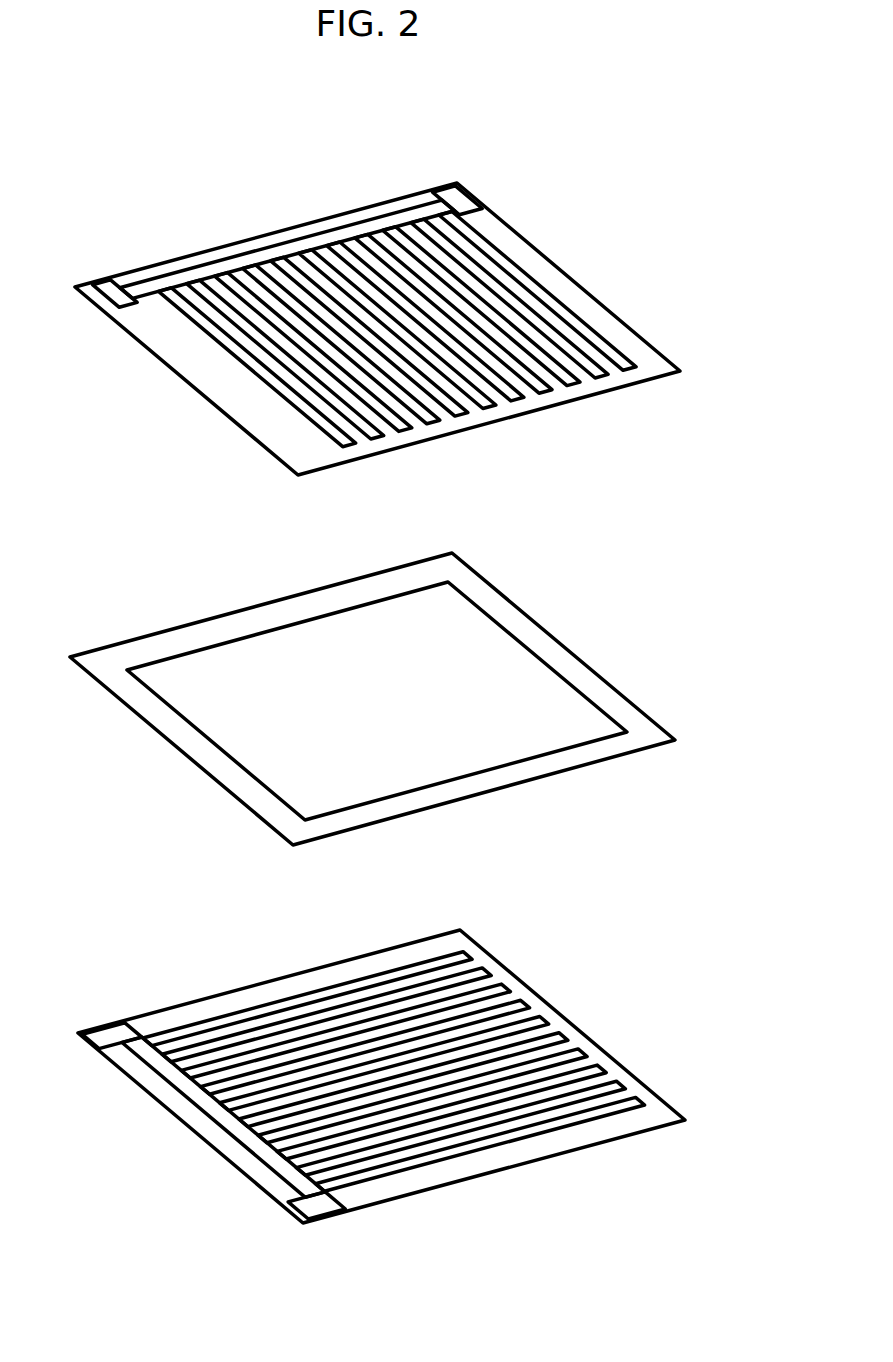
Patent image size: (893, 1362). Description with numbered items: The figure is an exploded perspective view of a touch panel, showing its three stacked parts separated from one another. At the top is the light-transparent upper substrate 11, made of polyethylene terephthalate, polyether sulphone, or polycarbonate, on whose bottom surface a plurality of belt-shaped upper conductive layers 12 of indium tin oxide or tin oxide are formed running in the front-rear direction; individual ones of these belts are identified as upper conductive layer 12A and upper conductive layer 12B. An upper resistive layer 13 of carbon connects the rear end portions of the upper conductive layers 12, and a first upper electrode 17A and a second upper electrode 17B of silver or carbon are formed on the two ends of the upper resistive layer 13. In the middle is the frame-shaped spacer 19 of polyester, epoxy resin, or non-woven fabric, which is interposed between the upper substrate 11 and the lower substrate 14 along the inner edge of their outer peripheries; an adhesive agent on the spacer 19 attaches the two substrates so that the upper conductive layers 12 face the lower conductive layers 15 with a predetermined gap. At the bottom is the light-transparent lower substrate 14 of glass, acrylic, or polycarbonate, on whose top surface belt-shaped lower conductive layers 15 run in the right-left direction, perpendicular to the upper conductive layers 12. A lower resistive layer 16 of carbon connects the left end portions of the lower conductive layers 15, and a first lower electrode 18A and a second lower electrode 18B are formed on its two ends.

The upper substrate 11 is at (603, 302).
The upper conductive layers 12 is at (447, 412).
The upper conductive layer 12A is at (480, 282).
The upper conductive layer 12B is at (267, 350).
The upper resistive layer 13 is at (257, 262).
The lower substrate 14 is at (633, 1133).
The lower conductive layers 15 is at (551, 1047).
The lower resistive layer 16 is at (273, 1160).
The first upper electrode 17A is at (462, 203).
The second upper electrode 17B is at (103, 288).
The first lower electrode 18A is at (310, 1205).
The second lower electrode 18B is at (107, 1043).
The spacer 19 is at (593, 670).